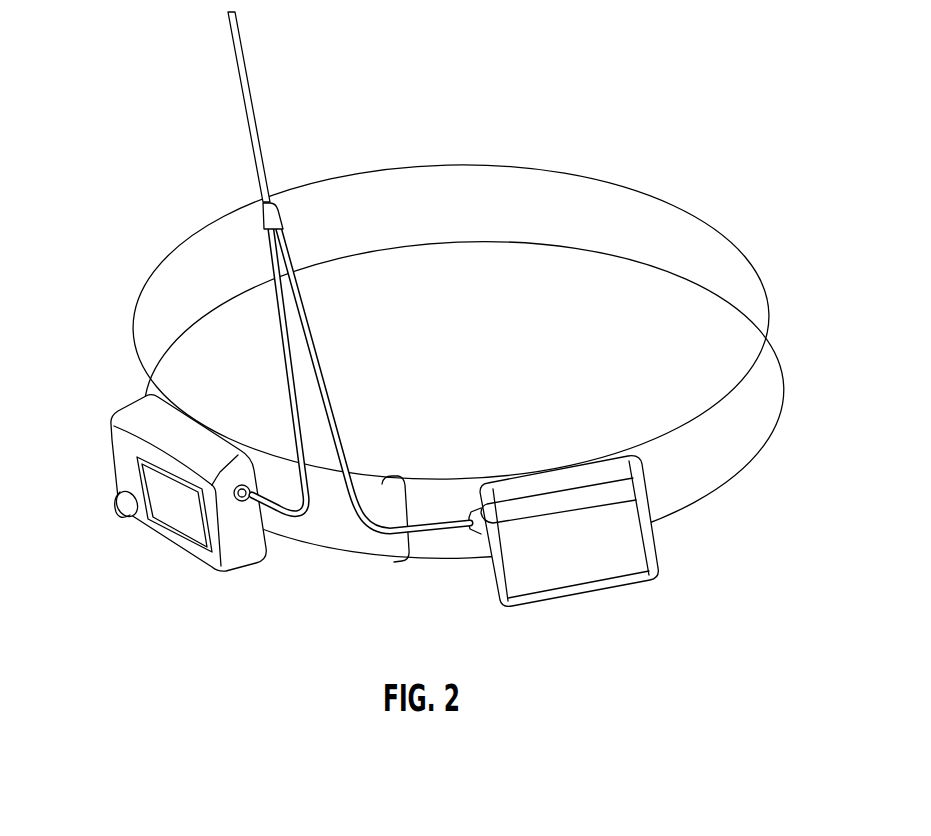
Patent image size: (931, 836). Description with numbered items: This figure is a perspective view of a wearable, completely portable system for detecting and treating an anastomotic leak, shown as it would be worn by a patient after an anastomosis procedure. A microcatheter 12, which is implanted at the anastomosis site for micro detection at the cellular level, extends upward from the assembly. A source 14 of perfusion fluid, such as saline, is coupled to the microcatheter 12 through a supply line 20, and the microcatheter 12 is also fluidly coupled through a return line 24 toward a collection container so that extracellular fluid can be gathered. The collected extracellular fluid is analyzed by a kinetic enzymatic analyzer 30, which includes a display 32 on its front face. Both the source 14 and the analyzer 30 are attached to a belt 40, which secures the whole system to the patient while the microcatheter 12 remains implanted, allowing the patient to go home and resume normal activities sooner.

The microcatheter 12 is at (258, 128).
The source of perfusion fluid 14 is at (658, 547).
The supply line 20 is at (330, 352).
The return line 24 is at (273, 358).
The kinetic enzymatic analyzer 30 is at (250, 538).
The display 32 is at (181, 520).
The belt 40 is at (693, 222).